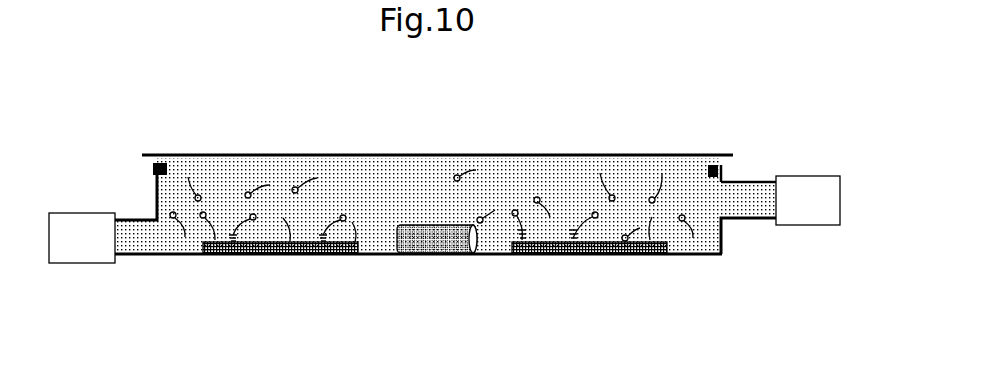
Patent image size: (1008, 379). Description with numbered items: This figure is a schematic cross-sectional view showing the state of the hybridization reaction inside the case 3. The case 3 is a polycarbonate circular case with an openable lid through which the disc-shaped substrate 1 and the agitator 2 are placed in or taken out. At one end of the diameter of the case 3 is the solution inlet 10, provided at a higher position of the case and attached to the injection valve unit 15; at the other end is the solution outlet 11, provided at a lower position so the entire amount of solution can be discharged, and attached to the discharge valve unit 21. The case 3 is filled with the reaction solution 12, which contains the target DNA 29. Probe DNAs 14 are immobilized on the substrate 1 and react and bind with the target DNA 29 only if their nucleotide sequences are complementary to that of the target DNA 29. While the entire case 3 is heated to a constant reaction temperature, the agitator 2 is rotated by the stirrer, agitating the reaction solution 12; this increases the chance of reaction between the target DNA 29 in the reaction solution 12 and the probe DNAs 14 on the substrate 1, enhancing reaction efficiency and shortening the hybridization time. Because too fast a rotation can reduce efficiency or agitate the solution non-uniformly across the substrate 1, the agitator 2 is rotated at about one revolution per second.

The disc-shaped substrate 1 is at (553, 256).
The agitator 2 is at (427, 252).
The case 3 is at (577, 155).
The solution inlet 10 is at (758, 198).
The solution outlet 11 is at (138, 252).
The reaction solution 12 is at (403, 177).
The probe DNAs 14 is at (228, 228).
The injection valve unit 15 is at (783, 175).
The discharge valve unit 21 is at (100, 212).
The target DNA 29 is at (468, 170).